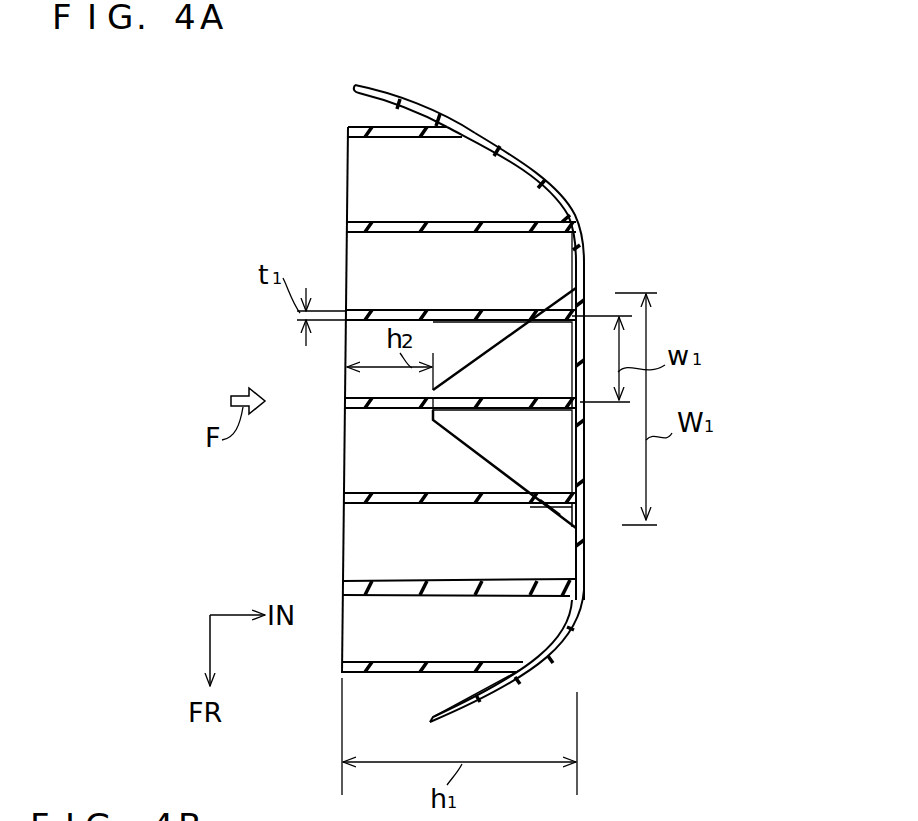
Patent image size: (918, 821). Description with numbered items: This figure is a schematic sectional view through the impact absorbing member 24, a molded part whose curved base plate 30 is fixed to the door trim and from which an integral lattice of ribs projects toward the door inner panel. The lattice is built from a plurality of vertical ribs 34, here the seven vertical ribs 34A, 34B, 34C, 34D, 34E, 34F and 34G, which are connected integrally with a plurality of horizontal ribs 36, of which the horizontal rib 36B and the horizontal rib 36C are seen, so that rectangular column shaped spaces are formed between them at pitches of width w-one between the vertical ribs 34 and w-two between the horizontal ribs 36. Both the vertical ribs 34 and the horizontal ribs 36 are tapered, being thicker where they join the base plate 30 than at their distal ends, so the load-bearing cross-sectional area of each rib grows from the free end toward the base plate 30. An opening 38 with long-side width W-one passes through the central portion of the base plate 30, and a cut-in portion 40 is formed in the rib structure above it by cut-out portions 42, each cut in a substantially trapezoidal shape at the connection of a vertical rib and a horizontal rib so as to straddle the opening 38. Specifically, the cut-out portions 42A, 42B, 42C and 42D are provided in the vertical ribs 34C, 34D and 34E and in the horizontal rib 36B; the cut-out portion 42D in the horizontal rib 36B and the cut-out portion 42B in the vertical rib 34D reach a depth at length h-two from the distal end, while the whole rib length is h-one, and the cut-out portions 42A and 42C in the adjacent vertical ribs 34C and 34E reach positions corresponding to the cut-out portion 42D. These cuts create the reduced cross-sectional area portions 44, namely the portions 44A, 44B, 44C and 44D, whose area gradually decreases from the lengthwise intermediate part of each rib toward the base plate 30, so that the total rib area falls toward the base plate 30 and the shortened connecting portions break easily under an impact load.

The impact absorbing member 24 is at (300, 257).
The base plate 30 is at (585, 265).
The vertical ribs 34 is at (369, 419).
The vertical rib 34A is at (380, 676).
The vertical rib 34B is at (352, 597).
The vertical rib 34C is at (355, 505).
The vertical rib 34D is at (355, 418).
The vertical rib 34E is at (352, 340).
The vertical rib 34F is at (372, 222).
The vertical rib 34G is at (352, 140).
The horizontal ribs 36 is at (588, 605).
The horizontal rib 36B is at (490, 545).
The horizontal rib 36C is at (580, 508).
The opening 38 is at (589, 301).
The cut-in portion 40 is at (556, 477).
The cut-out portions 42 is at (476, 366).
The cut-out portion 42A is at (543, 500).
The cut-out portion 42B is at (553, 387).
The cut-out portion 42C is at (550, 310).
The cut-out portion 42D is at (475, 467).
The reduced cross-sectional area portions 44 is at (520, 306).
The reduced cross-sectional area portion 44A is at (487, 497).
The reduced cross-sectional area portion 44B is at (543, 413).
The reduced cross-sectional area portion 44C is at (586, 255).
The reduced cross-sectional area portion 44D is at (449, 352).